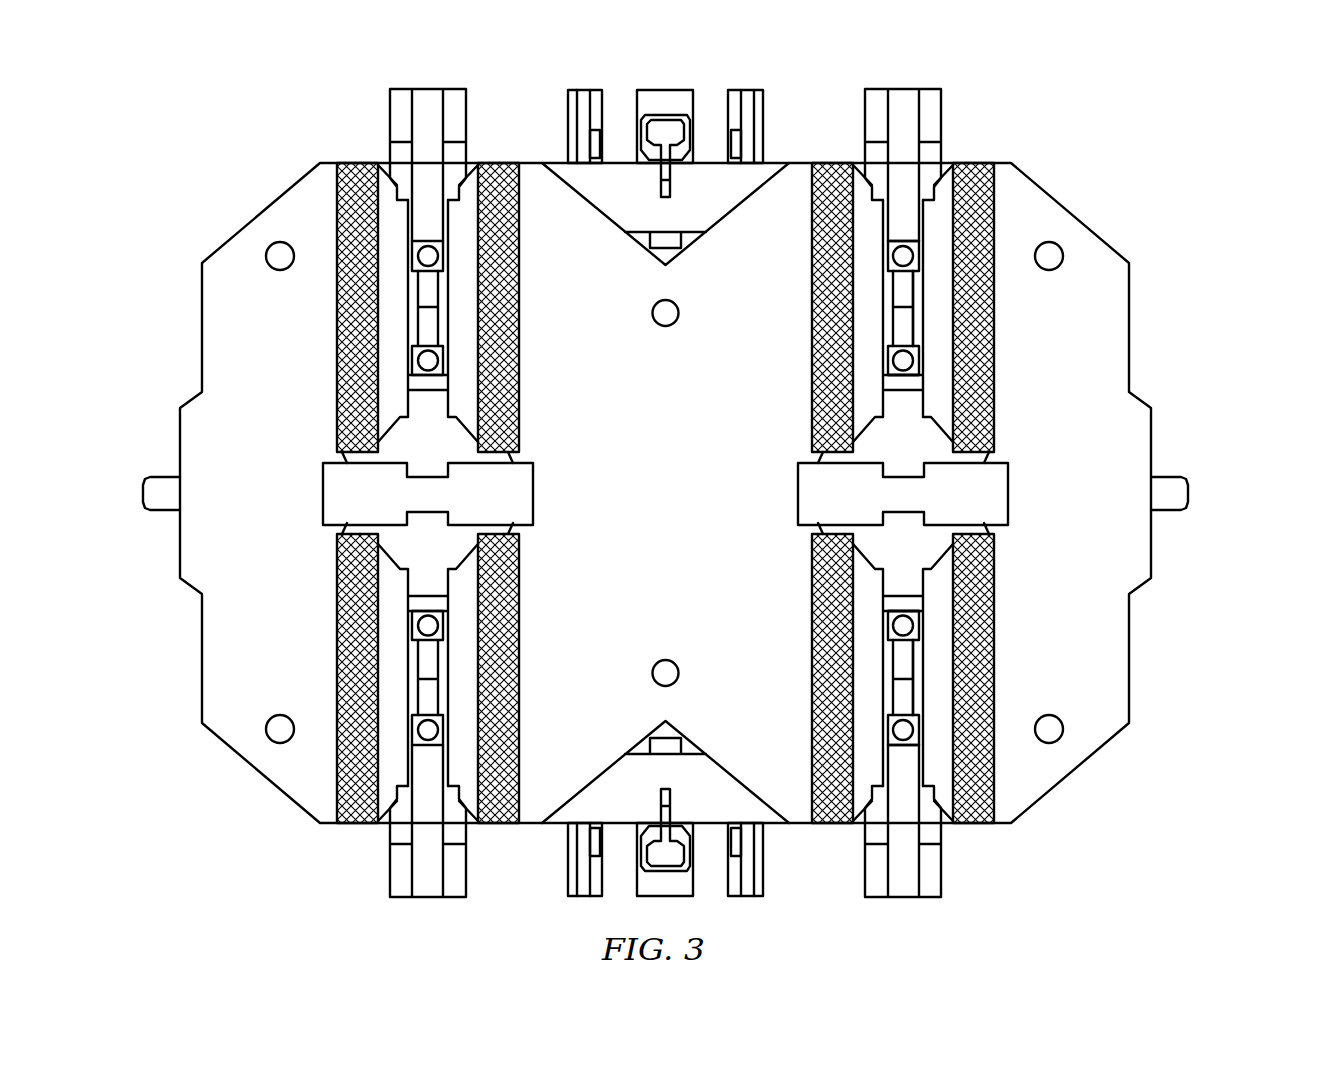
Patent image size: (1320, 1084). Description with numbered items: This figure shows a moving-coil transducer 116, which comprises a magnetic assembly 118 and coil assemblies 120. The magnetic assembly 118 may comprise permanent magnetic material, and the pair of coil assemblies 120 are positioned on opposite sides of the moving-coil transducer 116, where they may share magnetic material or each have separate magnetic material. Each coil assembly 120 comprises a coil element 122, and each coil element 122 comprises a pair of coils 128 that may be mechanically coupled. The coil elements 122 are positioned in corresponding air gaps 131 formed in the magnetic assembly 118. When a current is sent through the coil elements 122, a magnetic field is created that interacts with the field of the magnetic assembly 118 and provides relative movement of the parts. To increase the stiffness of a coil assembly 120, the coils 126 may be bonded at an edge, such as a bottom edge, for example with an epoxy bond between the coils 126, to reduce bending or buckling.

The moving-coil transducer 116 is at (1180, 640).
The magnetic assembly 118 is at (233, 227).
The coil assemblies 120 is at (1000, 113).
The coil element 122 is at (927, 276).
The coils 126 is at (438, 298).
The coils 128 is at (438, 325).
The air gaps 131 is at (432, 407).